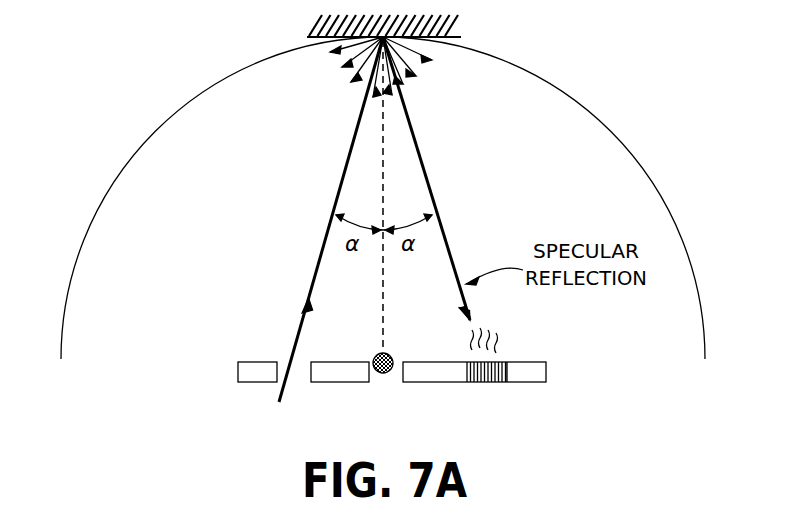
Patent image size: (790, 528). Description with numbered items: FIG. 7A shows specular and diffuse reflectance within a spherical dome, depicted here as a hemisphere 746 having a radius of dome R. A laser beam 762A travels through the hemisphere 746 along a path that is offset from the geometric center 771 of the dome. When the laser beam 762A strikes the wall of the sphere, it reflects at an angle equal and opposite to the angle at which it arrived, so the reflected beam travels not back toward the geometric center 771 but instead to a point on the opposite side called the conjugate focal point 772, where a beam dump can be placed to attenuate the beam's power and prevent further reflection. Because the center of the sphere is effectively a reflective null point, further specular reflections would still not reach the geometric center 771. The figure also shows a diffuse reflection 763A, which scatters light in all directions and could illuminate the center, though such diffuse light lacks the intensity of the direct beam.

The hemisphere 746 is at (168, 119).
The radius of dome R is at (643, 167).
The laser beam 762A is at (323, 237).
The diffuse reflection 763A is at (425, 70).
The geometric center 771 is at (383, 375).
The conjugate focal point 772 is at (483, 383).